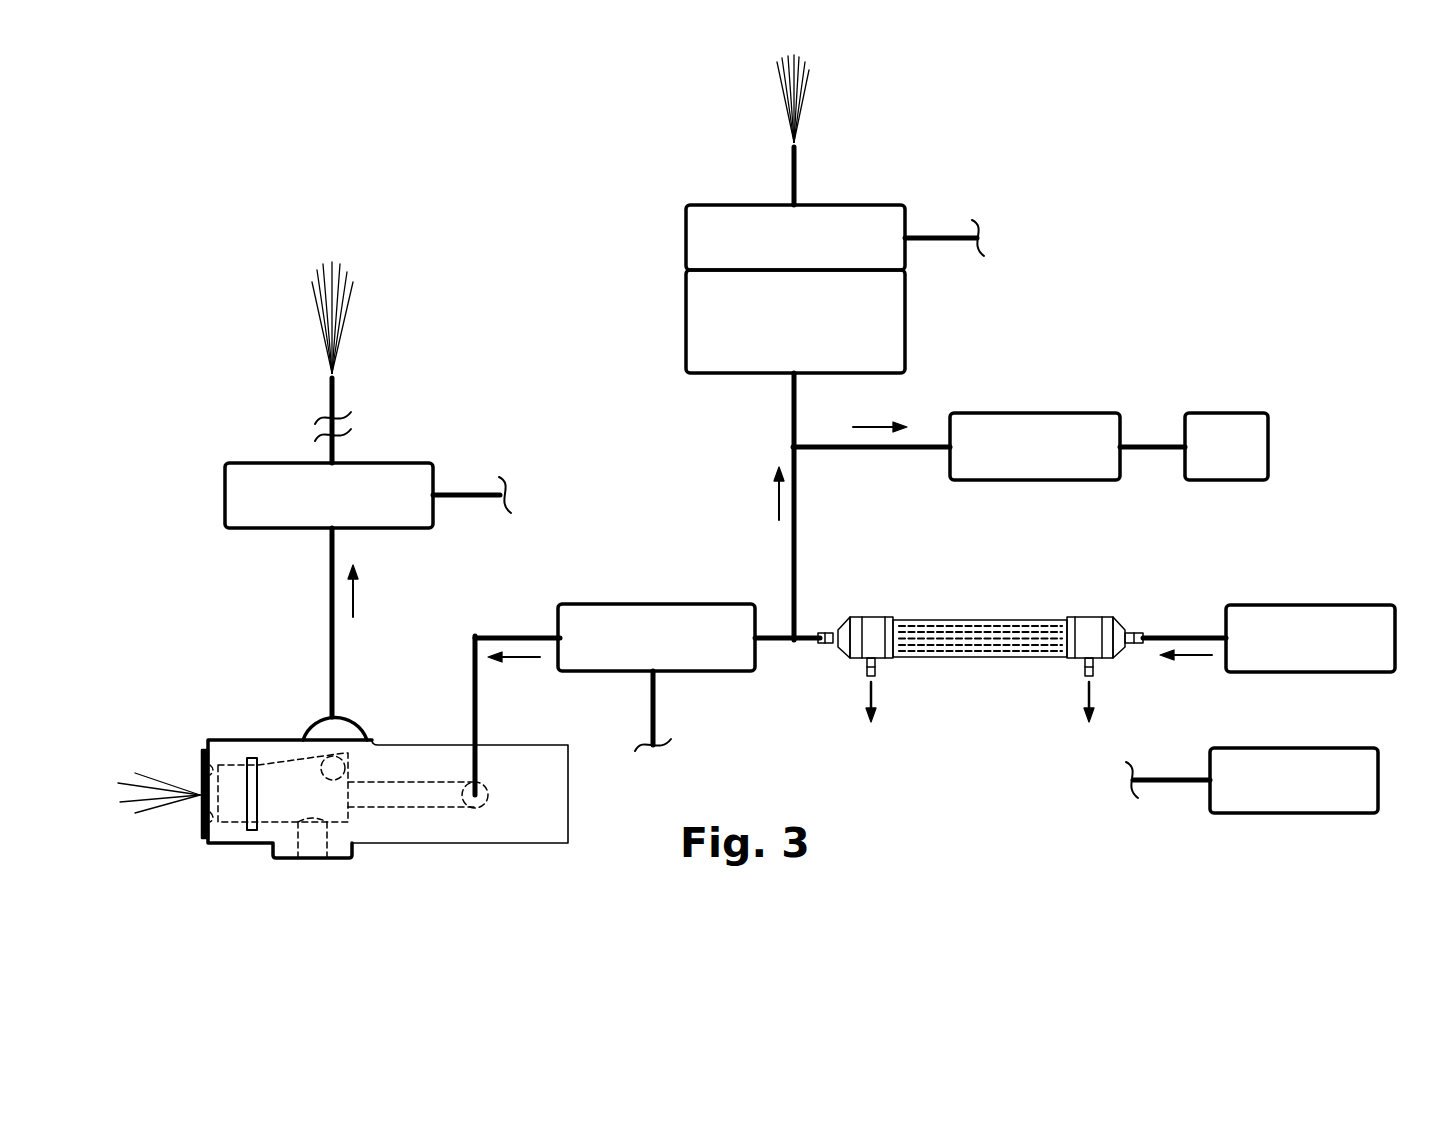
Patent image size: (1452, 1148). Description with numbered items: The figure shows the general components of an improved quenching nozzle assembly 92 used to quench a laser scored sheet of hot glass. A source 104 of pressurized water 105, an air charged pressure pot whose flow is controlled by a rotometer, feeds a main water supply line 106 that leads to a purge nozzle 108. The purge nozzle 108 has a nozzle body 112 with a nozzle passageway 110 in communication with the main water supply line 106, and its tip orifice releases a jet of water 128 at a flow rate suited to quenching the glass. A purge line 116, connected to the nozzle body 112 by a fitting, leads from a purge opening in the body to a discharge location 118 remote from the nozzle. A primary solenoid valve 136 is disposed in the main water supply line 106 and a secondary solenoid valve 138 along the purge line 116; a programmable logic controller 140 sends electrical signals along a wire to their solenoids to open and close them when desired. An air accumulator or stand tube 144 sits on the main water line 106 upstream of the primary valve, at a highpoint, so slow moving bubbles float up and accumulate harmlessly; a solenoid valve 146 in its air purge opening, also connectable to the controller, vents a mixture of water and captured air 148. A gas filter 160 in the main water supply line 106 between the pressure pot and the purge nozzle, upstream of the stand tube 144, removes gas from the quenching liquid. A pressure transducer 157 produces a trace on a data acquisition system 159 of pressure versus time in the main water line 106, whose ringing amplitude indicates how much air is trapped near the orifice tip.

The quenching nozzle assembly 92 is at (946, 767).
The source of pressurized water 104 is at (1375, 638).
The pressurized water 105 is at (153, 805).
The main water supply line 106 is at (1172, 638).
The purge nozzle 108 is at (535, 832).
The nozzle passageway 110 is at (385, 808).
The nozzle body 112 is at (417, 768).
The purge line 116 is at (332, 642).
The discharge location 118 is at (369, 377).
The jet of water 128 is at (157, 780).
The primary solenoid valve 136 is at (692, 648).
The secondary solenoid valve 138 is at (282, 527).
The programmable logic controller 140 is at (1285, 768).
The stand tube 144 is at (863, 334).
The solenoid valve 146 is at (857, 235).
The captured air 148 is at (800, 112).
The pressure transducer 157 is at (1040, 433).
The data acquisition system 159 is at (1225, 433).
The gas filter 160 is at (983, 628).